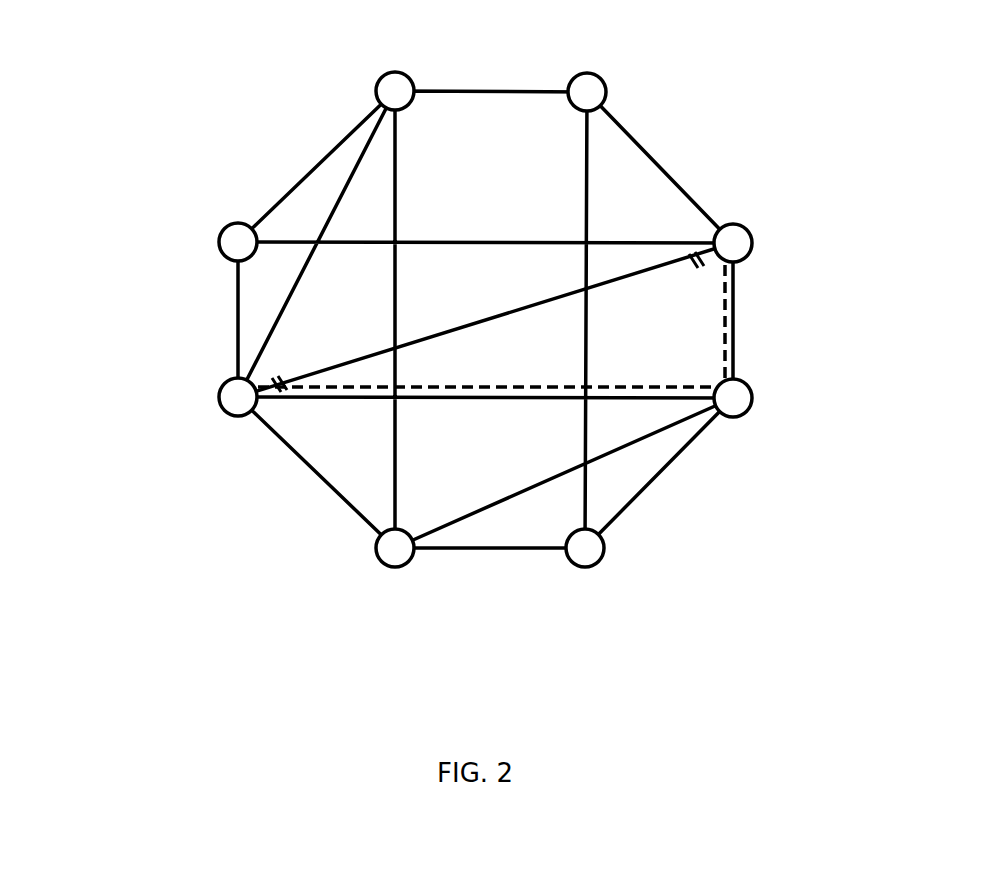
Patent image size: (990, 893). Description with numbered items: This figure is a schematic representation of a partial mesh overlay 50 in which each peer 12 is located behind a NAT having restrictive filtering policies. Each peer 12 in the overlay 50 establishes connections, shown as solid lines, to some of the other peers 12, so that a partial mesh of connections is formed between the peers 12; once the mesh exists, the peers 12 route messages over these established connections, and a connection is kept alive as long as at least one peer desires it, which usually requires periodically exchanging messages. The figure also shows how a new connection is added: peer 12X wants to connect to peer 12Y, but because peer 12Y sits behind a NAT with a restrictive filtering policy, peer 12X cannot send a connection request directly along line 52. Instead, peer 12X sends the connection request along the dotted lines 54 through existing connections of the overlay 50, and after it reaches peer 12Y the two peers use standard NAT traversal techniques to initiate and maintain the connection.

The peer 12 is at (380, 73).
The peer 12X is at (753, 236).
The peer 12Y is at (218, 398).
The partial mesh overlay 50 is at (812, 150).
The line 52 is at (496, 301).
The dotted lines 54 is at (682, 351).